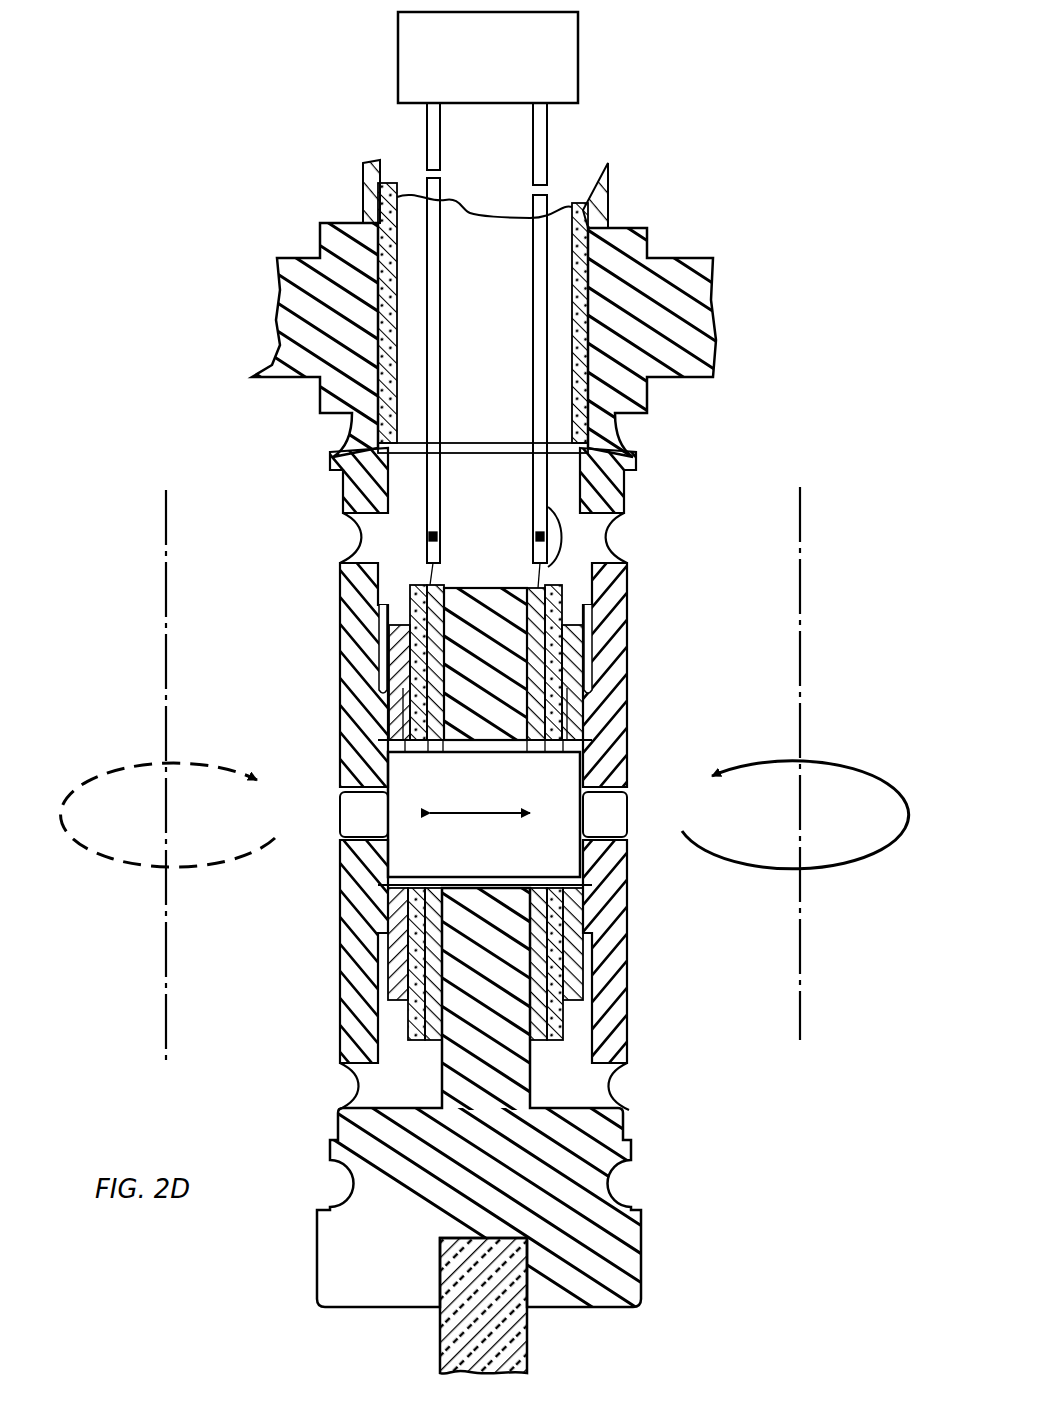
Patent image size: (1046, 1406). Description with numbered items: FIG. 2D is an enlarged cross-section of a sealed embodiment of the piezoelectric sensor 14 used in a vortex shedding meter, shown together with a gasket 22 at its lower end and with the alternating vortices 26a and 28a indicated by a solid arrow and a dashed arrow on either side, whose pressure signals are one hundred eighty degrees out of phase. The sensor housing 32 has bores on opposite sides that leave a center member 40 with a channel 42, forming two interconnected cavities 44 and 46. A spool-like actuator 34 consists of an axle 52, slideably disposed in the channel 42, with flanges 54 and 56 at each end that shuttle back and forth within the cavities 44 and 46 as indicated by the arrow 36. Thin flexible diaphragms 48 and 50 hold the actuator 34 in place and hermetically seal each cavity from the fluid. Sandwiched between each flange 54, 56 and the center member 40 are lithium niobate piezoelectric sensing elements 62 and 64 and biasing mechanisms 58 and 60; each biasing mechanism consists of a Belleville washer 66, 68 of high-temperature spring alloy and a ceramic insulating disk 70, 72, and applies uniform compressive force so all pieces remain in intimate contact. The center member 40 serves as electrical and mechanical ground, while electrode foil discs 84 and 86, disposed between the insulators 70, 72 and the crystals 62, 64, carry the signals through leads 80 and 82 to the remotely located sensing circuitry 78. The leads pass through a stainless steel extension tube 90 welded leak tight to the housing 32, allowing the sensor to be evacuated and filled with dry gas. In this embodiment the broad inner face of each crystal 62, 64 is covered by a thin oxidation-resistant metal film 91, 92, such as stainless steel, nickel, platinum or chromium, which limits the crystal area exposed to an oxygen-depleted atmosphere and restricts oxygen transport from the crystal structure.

The piezoelectric sensor 14 is at (735, 452).
The gasket 22 is at (527, 1333).
The vortex 26a is at (845, 861).
The vortex 28a is at (113, 861).
The sensor housing 32 is at (650, 232).
The spool-like actuator 34 is at (484, 814).
The arrow 36 is at (483, 815).
The center member 40 is at (486, 587).
The channel 42 is at (517, 735).
The cavity 44 is at (406, 1088).
The cavity 46 is at (565, 1088).
The diaphragm 48 is at (340, 503).
The diaphragm 50 is at (627, 505).
The axle 52 is at (563, 848).
The flange 54 is at (338, 683).
The flange 56 is at (627, 727).
The biasing mechanism 58 is at (397, 590).
The biasing mechanism 60 is at (573, 590).
The piezoelectric sensing element 62 is at (433, 587).
The piezoelectric sensing element 64 is at (540, 587).
The Belleville washer 66 is at (395, 643).
The Belleville washer 68 is at (575, 640).
The insulating disk 70 is at (410, 613).
The insulating disk 72 is at (560, 615).
The sensing circuitry 78 is at (488, 57).
The lead 80 is at (440, 200).
The lead 82 is at (547, 158).
The foil disc 84 is at (425, 583).
The foil disc 86 is at (548, 520).
The extension tube 90 is at (363, 192).
The metal film 91 is at (443, 995).
The metal film 92 is at (513, 988).